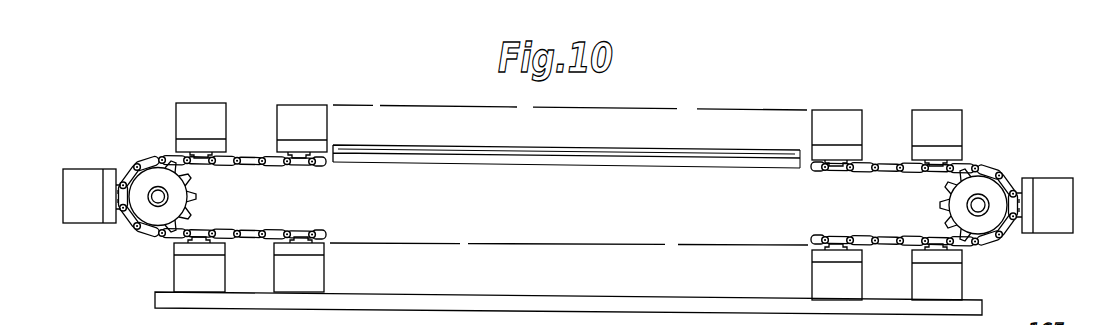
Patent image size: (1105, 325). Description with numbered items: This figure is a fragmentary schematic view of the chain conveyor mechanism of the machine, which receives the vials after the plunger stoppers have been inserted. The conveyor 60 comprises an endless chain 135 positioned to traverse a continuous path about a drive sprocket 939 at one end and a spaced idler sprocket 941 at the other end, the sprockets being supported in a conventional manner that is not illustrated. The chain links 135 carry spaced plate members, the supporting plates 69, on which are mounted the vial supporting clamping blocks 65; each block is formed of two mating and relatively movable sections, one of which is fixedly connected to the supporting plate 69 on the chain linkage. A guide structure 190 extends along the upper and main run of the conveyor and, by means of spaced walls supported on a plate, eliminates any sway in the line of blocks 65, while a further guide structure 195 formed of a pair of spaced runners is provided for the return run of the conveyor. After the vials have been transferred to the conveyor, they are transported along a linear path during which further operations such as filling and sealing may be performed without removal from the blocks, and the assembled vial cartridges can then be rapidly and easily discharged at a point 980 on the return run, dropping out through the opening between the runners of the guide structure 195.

The conveyor 60 is at (427, 172).
The vial supporting clamping block 65 is at (297, 110).
The supporting plate 69 is at (277, 145).
The endless chain 135 is at (297, 163).
The guide structure 190 is at (572, 173).
The guide structure 195 is at (554, 285).
The drive sprocket 939 is at (975, 190).
The idler sprocket 941 is at (156, 193).
The discharge point 980 is at (759, 234).